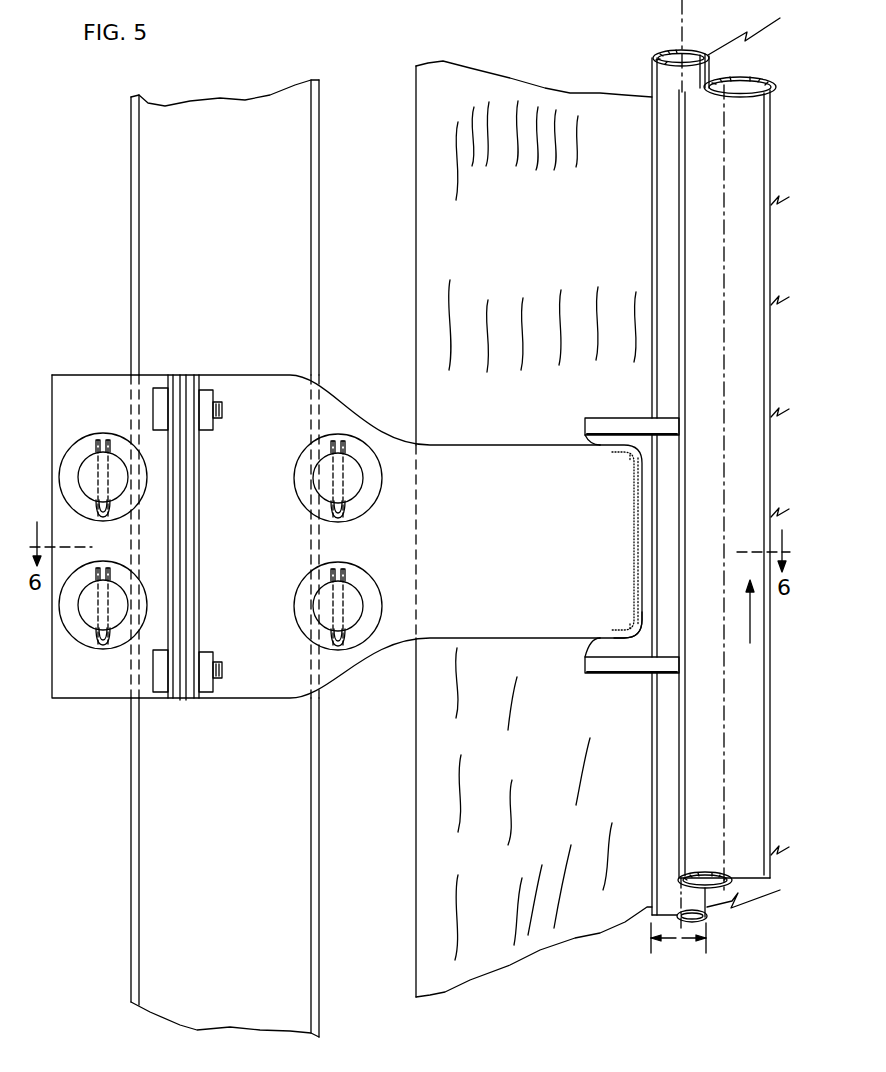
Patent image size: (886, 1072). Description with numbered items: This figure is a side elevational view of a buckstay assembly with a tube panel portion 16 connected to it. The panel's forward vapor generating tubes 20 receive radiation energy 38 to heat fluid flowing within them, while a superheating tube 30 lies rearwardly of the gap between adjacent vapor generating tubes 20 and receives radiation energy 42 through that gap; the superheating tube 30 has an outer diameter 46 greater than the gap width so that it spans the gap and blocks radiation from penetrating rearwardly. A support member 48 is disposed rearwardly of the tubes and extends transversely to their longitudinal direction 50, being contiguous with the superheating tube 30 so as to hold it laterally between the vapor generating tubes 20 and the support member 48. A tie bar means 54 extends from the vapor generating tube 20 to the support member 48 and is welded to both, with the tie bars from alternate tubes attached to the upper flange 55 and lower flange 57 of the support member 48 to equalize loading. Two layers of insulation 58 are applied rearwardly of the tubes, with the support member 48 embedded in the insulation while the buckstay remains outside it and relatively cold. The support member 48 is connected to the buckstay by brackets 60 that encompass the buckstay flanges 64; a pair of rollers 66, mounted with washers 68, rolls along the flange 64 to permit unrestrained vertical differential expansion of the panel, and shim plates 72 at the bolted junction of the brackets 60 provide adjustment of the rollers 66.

The tube panel portion 16 is at (620, 946).
The vapor generating tube 20 is at (761, 795).
The superheating tube 30 is at (707, 84).
The radiation energy 38 is at (773, 512).
The radiation energy 42 is at (752, 903).
The outer diameter 46 is at (685, 942).
The support member 48 is at (645, 528).
The longitudinal direction 50 is at (748, 622).
The tie bar means 54 is at (638, 673).
The upper flange 55 is at (592, 442).
The lower flange 57 is at (618, 647).
The insulation 58 is at (545, 943).
The bracket 60 is at (51, 430).
The flange 64 is at (320, 174).
The roller 66 is at (88, 492).
The washer 68 is at (118, 645).
The shim plate 72 is at (186, 698).